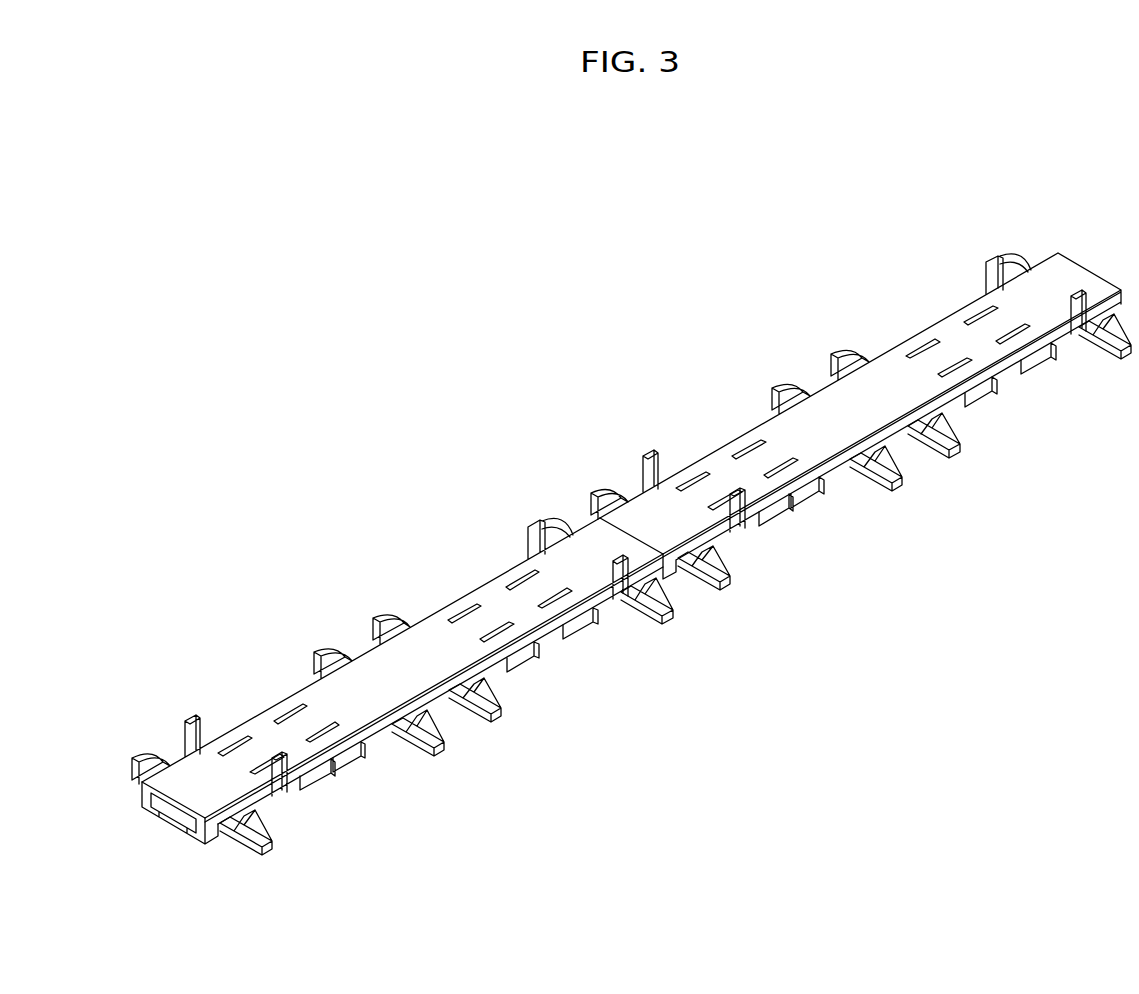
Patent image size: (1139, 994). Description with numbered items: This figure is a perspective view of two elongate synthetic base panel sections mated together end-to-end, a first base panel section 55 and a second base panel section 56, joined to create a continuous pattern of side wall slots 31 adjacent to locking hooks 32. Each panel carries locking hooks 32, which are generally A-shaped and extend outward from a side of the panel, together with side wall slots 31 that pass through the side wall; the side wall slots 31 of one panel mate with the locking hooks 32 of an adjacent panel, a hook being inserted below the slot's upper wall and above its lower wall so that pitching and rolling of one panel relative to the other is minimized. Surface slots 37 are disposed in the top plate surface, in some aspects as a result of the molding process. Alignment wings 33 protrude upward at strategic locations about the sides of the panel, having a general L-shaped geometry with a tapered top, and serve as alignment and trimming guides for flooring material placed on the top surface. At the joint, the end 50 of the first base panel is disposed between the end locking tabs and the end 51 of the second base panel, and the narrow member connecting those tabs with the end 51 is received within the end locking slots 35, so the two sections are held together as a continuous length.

The side wall slot 31 is at (347, 758).
The locking hook 32 is at (437, 738).
The alignment wing 33 is at (998, 257).
The end locking slot 35 is at (176, 815).
The surface slot 37 is at (753, 447).
The end of the first base panel 50 is at (593, 535).
The end of the second base panel 51 is at (647, 502).
The first base panel section 55 is at (245, 668).
The second base panel section 56 is at (926, 290).